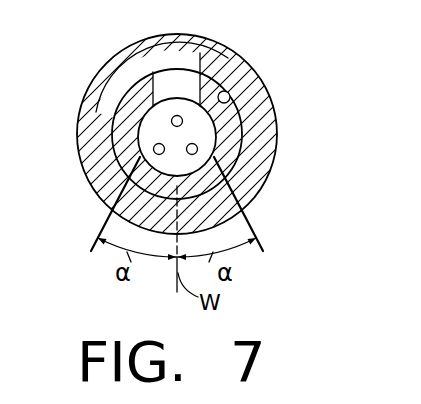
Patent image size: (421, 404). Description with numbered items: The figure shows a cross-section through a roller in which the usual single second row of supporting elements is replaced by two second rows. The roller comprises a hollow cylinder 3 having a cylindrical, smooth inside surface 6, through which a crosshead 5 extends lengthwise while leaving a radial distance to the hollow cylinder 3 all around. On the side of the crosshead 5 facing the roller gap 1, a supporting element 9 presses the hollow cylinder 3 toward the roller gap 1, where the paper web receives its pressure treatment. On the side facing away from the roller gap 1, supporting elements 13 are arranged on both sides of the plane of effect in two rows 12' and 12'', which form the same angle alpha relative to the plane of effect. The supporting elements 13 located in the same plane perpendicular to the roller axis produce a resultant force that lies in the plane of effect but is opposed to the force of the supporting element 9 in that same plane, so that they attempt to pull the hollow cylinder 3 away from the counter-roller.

The roller gap 1 is at (212, 38).
The hollow cylinder 3 is at (258, 130).
The crosshead 5 is at (120, 110).
The inside surface 6 is at (231, 96).
The supporting element 9 is at (177, 82).
The supporting element 13 is at (135, 165).
The row of supporting elements 12' is at (88, 206).
The row of supporting elements 12'' is at (278, 206).